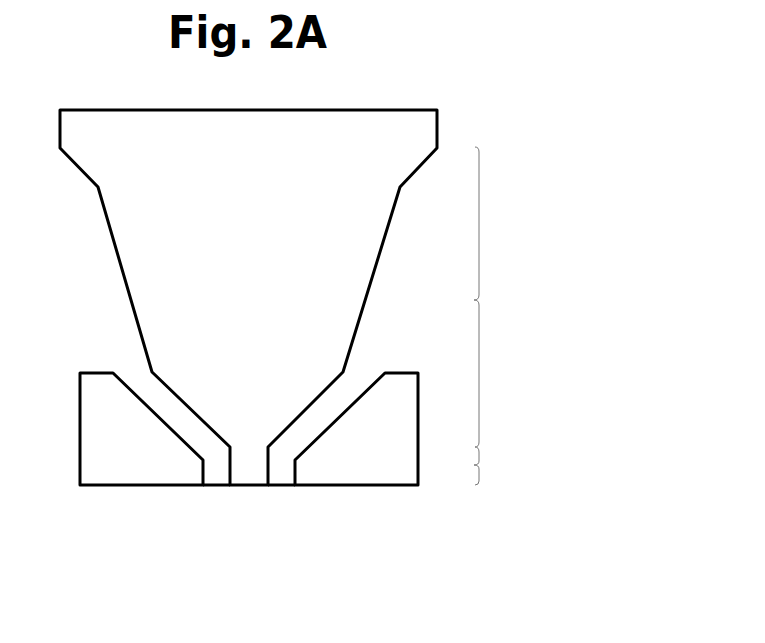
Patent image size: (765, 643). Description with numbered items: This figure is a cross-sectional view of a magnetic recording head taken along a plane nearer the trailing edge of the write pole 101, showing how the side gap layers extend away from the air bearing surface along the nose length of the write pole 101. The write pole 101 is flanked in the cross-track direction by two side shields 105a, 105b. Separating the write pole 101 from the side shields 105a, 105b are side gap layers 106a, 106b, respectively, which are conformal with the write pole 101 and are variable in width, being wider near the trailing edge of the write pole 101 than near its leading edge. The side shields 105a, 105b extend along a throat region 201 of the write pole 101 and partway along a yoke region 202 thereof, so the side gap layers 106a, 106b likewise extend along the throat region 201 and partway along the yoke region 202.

The write pole 101 is at (248, 297).
The side shield 105a is at (141, 429).
The side shield 105b is at (356, 429).
The side gap layer 106a is at (215, 485).
The side gap layer 106b is at (282, 485).
The throat region 201 is at (482, 465).
The yoke region 202 is at (482, 300).